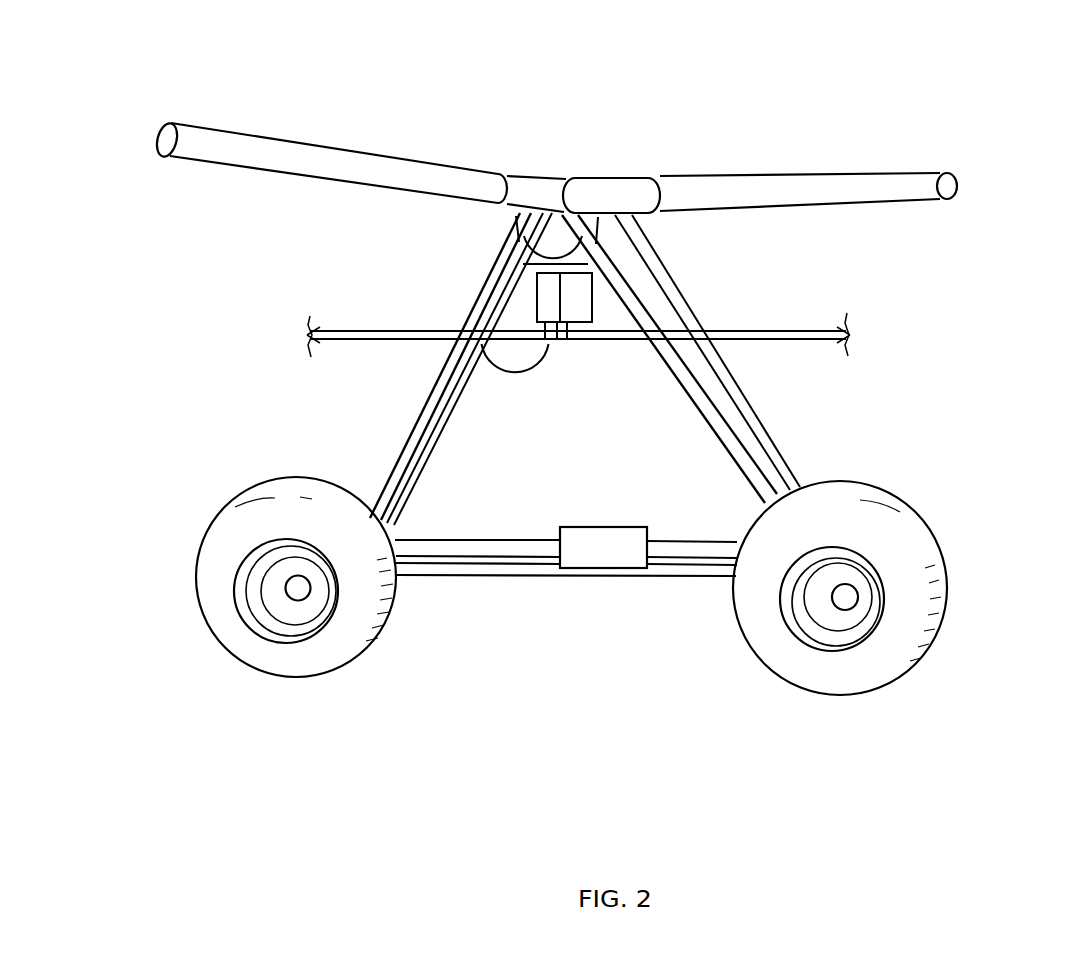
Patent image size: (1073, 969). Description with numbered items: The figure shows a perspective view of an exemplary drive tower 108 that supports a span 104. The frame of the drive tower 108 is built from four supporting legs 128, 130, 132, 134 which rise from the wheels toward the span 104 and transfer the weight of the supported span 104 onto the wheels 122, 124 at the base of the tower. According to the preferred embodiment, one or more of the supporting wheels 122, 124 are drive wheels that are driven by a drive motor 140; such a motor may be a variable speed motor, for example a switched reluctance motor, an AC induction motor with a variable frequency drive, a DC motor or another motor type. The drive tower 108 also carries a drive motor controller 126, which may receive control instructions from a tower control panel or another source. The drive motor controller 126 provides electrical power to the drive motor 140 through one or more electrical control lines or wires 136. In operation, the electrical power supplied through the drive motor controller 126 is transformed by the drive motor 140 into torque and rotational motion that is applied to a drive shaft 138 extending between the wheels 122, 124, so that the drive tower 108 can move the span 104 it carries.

The span 104 is at (390, 174).
The drive tower 108 is at (690, 88).
The wheel 122 is at (233, 602).
The wheel 124 is at (930, 596).
The drive motor controller 126 is at (556, 286).
The supporting leg 128 is at (600, 263).
The supporting leg 130 is at (670, 286).
The supporting leg 132 is at (420, 408).
The supporting leg 134 is at (430, 447).
The electrical control lines/wires 136 is at (520, 372).
The drive shaft 138 is at (522, 568).
The drive motor 140 is at (577, 555).